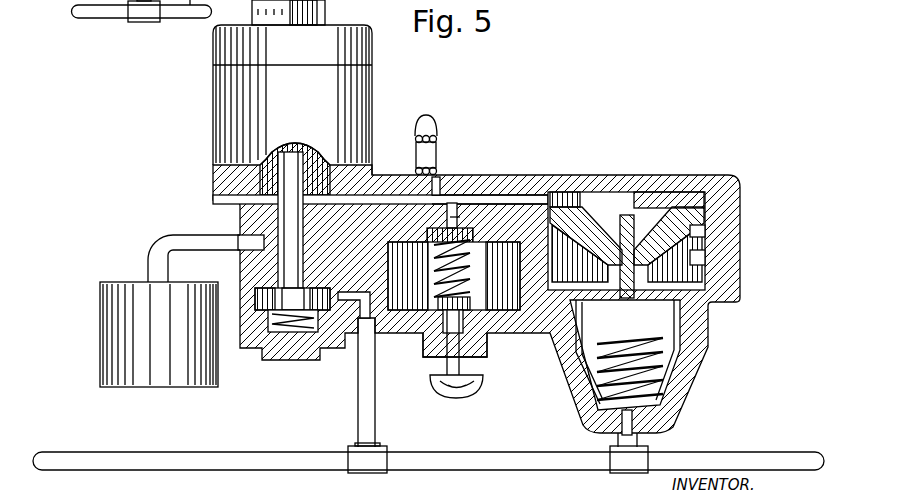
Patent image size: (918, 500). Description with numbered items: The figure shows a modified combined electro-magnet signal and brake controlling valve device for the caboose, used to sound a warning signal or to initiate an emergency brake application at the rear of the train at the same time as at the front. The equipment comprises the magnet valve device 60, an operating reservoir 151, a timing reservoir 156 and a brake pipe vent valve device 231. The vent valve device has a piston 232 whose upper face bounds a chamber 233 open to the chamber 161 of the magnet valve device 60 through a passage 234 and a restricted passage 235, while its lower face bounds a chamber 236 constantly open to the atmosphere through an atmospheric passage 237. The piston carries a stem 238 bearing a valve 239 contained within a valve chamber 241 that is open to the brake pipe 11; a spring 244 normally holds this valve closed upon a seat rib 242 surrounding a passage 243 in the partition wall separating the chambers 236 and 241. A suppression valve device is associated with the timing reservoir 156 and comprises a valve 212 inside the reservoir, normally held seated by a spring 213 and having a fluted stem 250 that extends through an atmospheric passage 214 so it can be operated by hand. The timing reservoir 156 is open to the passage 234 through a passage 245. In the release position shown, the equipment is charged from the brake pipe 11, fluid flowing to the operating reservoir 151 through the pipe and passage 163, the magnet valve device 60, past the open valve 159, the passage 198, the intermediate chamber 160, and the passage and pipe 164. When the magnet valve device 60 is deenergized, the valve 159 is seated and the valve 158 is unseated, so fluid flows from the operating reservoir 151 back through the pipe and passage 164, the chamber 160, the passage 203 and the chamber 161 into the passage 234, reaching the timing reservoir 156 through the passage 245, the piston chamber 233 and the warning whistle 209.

The brake pipe 11 is at (438, 462).
The magnet valve device 60 is at (379, 90).
The operating reservoir 151 is at (180, 375).
The timing reservoir 156 is at (582, 203).
The valve 158 is at (280, 199).
The valve 159 is at (290, 350).
The intermediate chamber 160 is at (312, 245).
The chamber 161 is at (267, 177).
The pipe and passage 163 is at (367, 352).
The passage and pipe 164 is at (230, 242).
The passage 198 is at (262, 263).
The passage 203 is at (222, 117).
The warning whistle 209 is at (415, 153).
The valve 212 is at (443, 267).
The spring 213 is at (452, 298).
The atmospheric passage 214 is at (470, 352).
The brake pipe vent valve device 231 is at (743, 300).
The piston 232 is at (674, 192).
The chamber 233 is at (644, 193).
The passage 234 is at (518, 196).
The restricted passage 235 is at (440, 193).
The chamber 236 is at (705, 233).
The atmospheric passage 237 is at (705, 262).
The stem 238 is at (647, 260).
The valve 239 is at (666, 320).
The valve chamber 241 is at (688, 356).
The seat rib 242 is at (543, 333).
The passage 243 is at (480, 326).
The spring 244 is at (657, 378).
The passage 245 is at (478, 218).
The fluted stem 250 is at (438, 374).